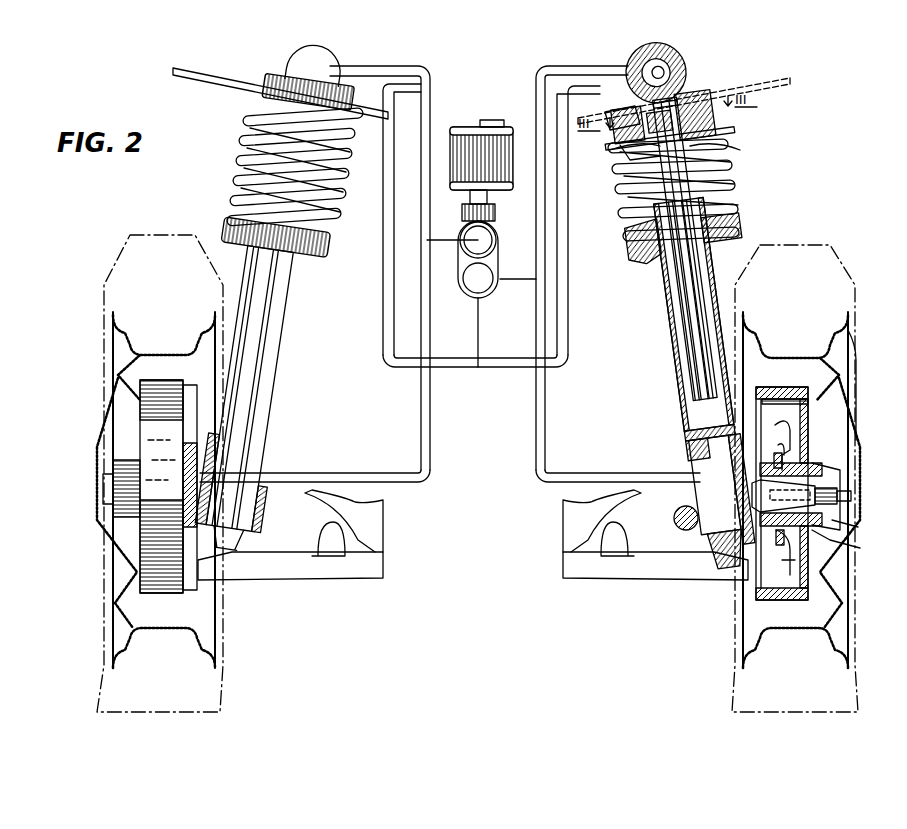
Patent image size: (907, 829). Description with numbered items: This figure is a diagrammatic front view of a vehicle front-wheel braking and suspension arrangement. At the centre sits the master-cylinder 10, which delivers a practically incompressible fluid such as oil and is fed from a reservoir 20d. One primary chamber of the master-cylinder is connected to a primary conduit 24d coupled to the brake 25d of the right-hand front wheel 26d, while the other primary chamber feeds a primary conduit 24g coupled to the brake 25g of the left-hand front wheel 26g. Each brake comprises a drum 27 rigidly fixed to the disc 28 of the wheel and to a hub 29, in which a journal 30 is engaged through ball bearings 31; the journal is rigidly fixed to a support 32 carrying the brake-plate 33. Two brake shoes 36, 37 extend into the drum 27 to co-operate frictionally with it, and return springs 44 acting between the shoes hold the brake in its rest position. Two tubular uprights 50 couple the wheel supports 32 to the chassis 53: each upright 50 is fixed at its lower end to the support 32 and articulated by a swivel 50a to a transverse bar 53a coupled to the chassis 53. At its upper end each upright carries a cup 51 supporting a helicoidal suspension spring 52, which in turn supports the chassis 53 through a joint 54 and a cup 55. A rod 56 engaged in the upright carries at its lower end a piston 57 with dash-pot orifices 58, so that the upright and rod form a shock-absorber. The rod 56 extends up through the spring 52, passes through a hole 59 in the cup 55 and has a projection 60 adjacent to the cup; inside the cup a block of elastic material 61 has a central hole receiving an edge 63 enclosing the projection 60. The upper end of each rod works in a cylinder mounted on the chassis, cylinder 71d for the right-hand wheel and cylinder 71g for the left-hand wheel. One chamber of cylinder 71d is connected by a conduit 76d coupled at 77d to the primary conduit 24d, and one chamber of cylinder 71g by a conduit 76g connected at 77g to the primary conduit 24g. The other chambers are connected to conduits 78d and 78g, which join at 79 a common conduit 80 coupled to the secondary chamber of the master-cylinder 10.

The master-cylinder 10 is at (506, 234).
The reservoir 20d is at (470, 130).
The primary conduit 24d is at (313, 474).
The primary conduit 24g is at (554, 482).
The brake 25d is at (128, 432).
The brake 25g is at (822, 419).
The right-hand front wheel 26d is at (97, 690).
The left-hand front wheel 26g is at (850, 688).
The drum 27 is at (140, 563).
The disc 28 is at (840, 357).
The hub 29 is at (842, 468).
The journal 30 is at (96, 491).
The ball bearings 31 is at (830, 522).
The support 32 is at (208, 447).
The brake-plate 33 is at (185, 372).
The brake shoe 36 is at (789, 600).
The brake shoe 37 is at (779, 388).
The return springs 44 is at (826, 537).
The tubular upright 50 is at (285, 299).
The swivel 50a is at (721, 584).
The cup 51 is at (642, 258).
The helicoidal suspension spring 52 is at (242, 160).
The chassis 53 is at (782, 88).
The transverse bar 53a is at (298, 582).
The joint 54 is at (608, 116).
The cup 55 is at (632, 152).
The rod 56 is at (672, 297).
The piston 57 is at (702, 442).
The dash-pot orifices 58 is at (706, 428).
The hole 59 is at (722, 152).
The projection 60 is at (716, 130).
The block of elastic material 61 is at (640, 118).
The edge 63 is at (688, 102).
The cylinder 71d is at (312, 52).
The cylinder 71g is at (650, 64).
The conduit 76d is at (430, 54).
The conduit 76g is at (549, 66).
The coupling point 77d is at (440, 234).
The coupling point 77g is at (536, 283).
The conduit 78d is at (385, 346).
The conduit 78g is at (569, 348).
The junction 79 is at (460, 366).
The common conduit 80 is at (477, 333).